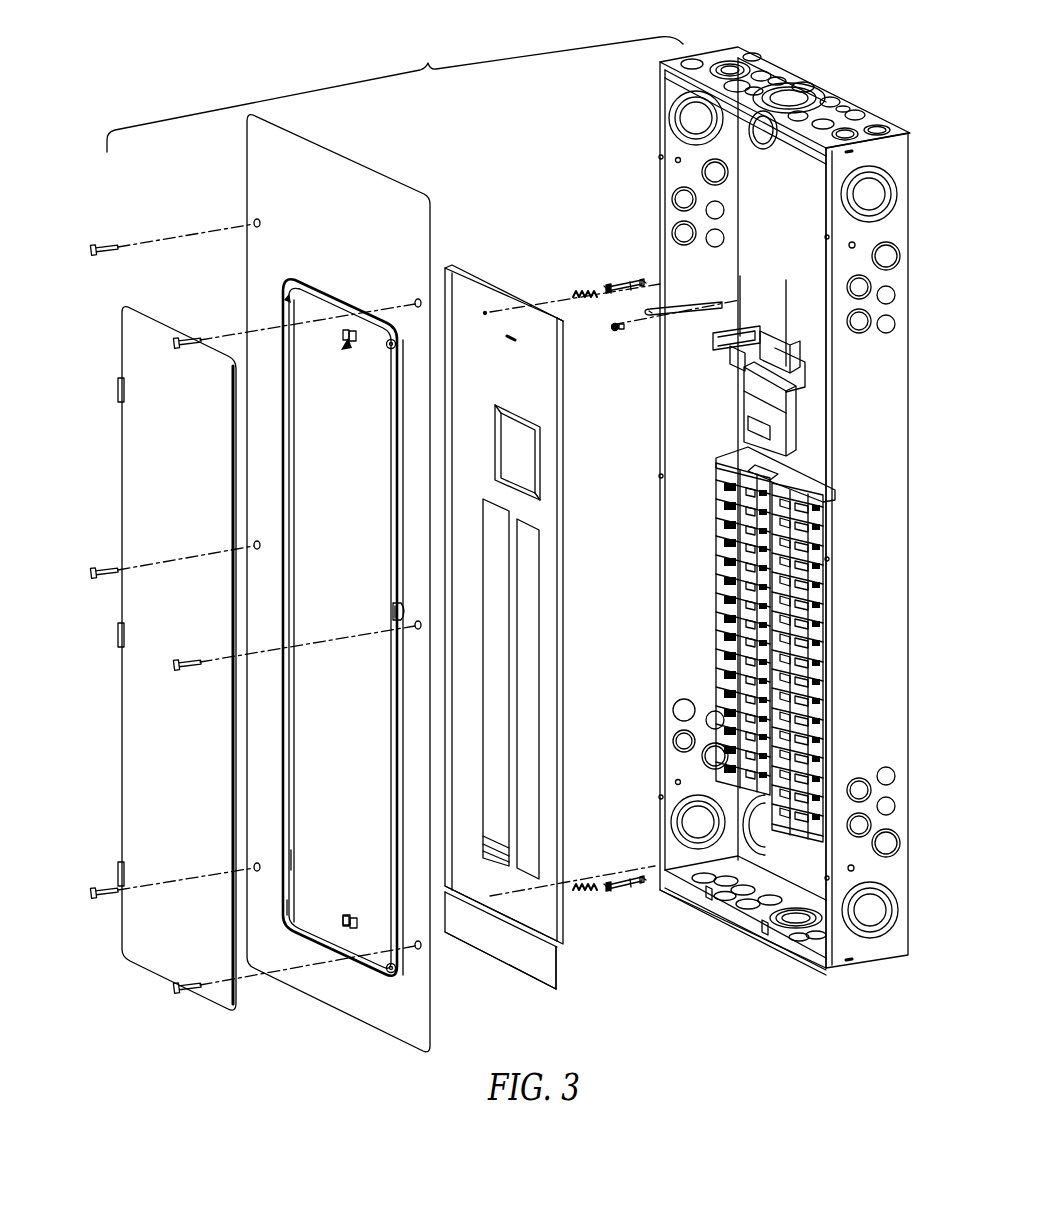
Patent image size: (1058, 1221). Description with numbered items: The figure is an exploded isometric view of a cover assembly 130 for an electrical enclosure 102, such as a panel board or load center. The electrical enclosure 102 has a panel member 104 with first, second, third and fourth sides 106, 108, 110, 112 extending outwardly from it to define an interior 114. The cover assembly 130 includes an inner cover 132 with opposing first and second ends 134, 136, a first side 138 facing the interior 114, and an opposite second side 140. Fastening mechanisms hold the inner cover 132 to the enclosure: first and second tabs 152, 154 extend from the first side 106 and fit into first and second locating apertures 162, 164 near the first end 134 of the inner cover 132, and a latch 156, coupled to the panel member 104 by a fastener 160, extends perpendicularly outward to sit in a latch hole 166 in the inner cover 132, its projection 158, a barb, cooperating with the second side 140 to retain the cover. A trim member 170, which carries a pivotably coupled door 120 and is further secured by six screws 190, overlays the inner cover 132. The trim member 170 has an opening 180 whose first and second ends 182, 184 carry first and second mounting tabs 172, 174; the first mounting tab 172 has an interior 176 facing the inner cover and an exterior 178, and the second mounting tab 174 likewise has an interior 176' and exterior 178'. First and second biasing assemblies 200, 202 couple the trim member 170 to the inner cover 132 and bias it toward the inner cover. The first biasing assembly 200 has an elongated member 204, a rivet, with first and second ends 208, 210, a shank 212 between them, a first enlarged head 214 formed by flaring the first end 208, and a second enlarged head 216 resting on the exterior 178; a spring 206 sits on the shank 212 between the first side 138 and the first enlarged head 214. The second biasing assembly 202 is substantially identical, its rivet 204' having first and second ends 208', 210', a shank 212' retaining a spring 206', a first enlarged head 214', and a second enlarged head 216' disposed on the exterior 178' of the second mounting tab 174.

The electrical enclosure 102 is at (711, 1020).
The panel member 104 is at (809, 182).
The first side 106 is at (816, 945).
The second side 108 is at (675, 48).
The third side 110 is at (681, 392).
The fourth side 112 is at (841, 423).
The interior 114 is at (693, 508).
The door 120 is at (164, 455).
The cover assembly 130 is at (401, 62).
The inner cover 132 is at (486, 375).
The first end 134 is at (558, 992).
The second end 136 is at (578, 326).
The first side 138 is at (569, 406).
The second side 140 is at (470, 276).
The first tab 152 is at (713, 906).
The second tab 154 is at (770, 930).
The latch 156 is at (690, 308).
The projection 158 is at (646, 313).
The fastener 160 is at (619, 330).
The first locating aperture 162 is at (480, 951).
The second locating aperture 164 is at (535, 973).
The latch hole 166 is at (508, 336).
The trim member 170 is at (314, 228).
The first mounting tab 172 is at (351, 919).
The second mounting tab 174 is at (346, 346).
The interior 176 is at (373, 901).
The interior 176' is at (370, 365).
The exterior 178 is at (322, 899).
The exterior 178' is at (320, 348).
The opening 180 is at (312, 858).
The first end 182 is at (312, 908).
The second end 184 is at (286, 302).
The screws 190 is at (95, 246).
The first biasing assembly 200 is at (602, 899).
The second biasing assembly 202 is at (609, 194).
The elongated member 204 is at (628, 852).
The rivet 204' is at (618, 260).
The spring 206 is at (584, 861).
The spring 206' is at (562, 285).
The first end 208 is at (660, 920).
The first end 208' is at (637, 220).
The second end 210 is at (625, 928).
The second end 210' is at (577, 246).
The shank 212 is at (639, 904).
The shank 212' is at (623, 245).
The first enlarged head 214 is at (637, 831).
The first enlarged head 214' is at (676, 265).
The second enlarged head 216 is at (590, 846).
The second enlarged head 216' is at (580, 265).